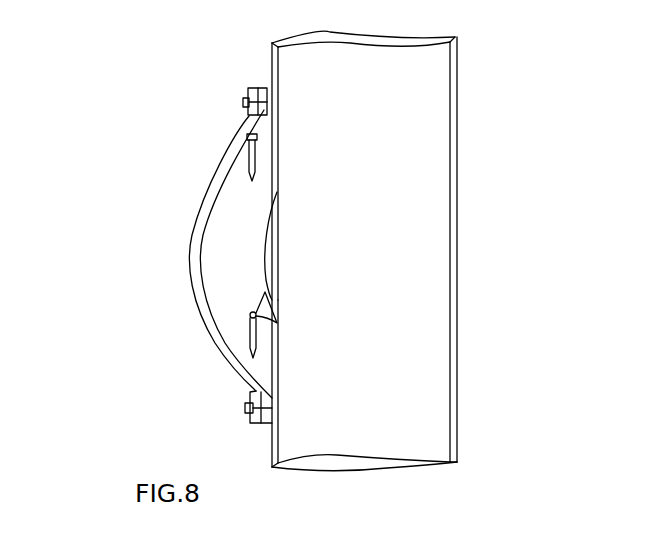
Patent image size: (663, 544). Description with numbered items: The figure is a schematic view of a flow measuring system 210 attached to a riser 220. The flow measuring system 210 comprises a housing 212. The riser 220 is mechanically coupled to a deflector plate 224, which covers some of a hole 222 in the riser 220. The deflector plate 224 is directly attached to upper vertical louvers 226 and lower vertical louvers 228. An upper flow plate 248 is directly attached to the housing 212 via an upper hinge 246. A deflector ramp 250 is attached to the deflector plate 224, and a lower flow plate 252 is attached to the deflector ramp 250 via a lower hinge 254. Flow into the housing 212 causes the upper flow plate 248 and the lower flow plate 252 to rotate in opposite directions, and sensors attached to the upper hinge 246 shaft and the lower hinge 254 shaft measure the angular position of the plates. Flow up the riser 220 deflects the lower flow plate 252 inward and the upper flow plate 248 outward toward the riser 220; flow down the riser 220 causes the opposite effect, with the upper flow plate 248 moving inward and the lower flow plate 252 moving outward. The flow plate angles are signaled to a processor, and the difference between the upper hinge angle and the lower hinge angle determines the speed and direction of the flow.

The flow measuring system 210 is at (200, 75).
The housing 212 is at (233, 140).
The riser 220 is at (457, 70).
The hole 222 is at (287, 110).
The deflector plate 224 is at (272, 257).
The upper vertical louvers 226 is at (281, 170).
The lower vertical louvers 228 is at (273, 373).
The upper hinge 246 is at (258, 136).
The upper flow plate 248 is at (274, 126).
The deflector ramp 250 is at (265, 292).
The lower flow plate 252 is at (247, 340).
The lower hinge 254 is at (260, 313).